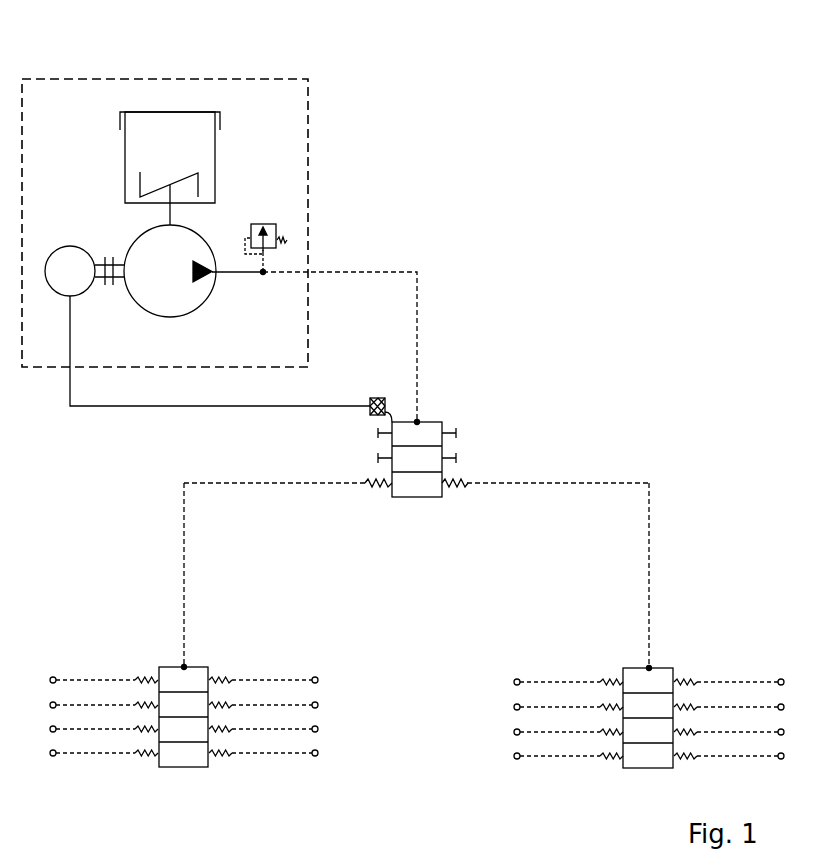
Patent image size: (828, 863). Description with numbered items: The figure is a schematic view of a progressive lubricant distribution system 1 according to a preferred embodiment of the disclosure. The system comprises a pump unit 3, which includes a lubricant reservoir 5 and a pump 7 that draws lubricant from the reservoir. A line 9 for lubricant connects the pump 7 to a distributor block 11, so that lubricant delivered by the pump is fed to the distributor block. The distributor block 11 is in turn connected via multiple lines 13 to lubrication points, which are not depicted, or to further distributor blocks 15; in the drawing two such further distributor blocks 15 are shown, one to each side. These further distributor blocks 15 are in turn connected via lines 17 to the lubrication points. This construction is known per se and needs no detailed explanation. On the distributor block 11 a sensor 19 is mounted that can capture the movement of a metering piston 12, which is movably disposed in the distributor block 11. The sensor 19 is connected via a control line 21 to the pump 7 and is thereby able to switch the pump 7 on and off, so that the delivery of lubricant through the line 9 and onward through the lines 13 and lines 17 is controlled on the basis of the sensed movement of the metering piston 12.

The hydraulic system 1 is at (477, 149).
The pump unit 3 is at (300, 132).
The lubricant reservoir 5 is at (170, 125).
The pump 7 is at (157, 290).
The line 9 is at (417, 322).
The distributor block 11 is at (428, 432).
The metering piston 12 is at (423, 462).
The lines 13 is at (184, 600).
The further distributor blocks 15 is at (193, 675).
The lines 17 is at (258, 752).
The sensor 19 is at (373, 415).
The control line 21 is at (185, 408).